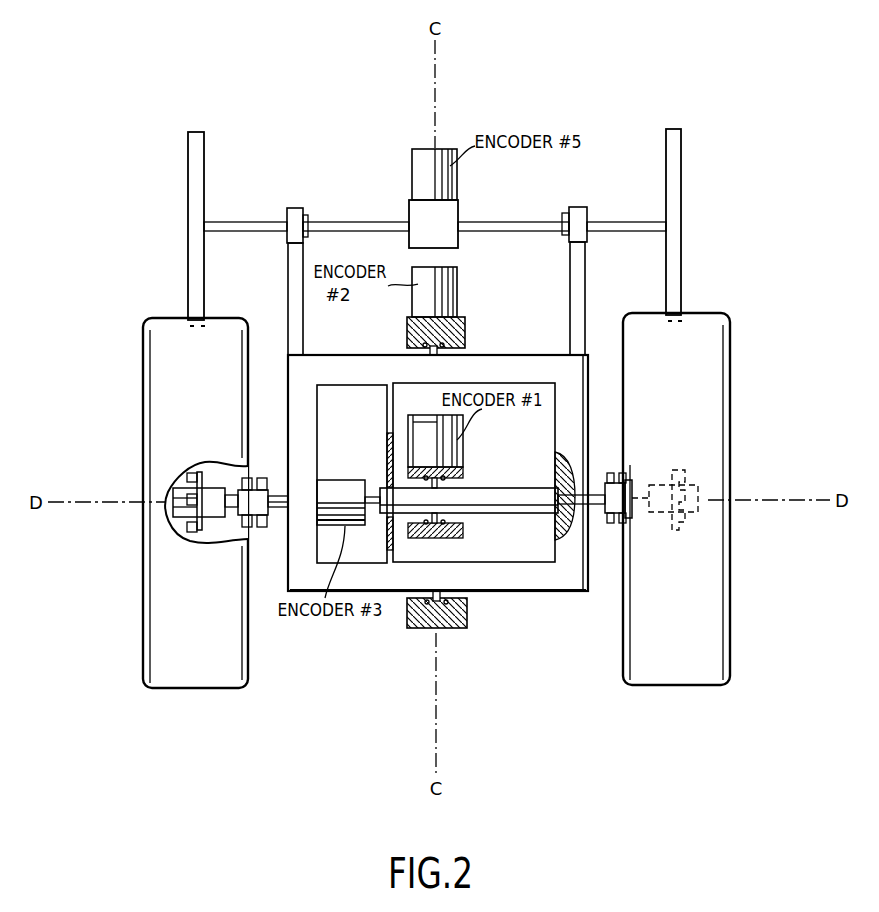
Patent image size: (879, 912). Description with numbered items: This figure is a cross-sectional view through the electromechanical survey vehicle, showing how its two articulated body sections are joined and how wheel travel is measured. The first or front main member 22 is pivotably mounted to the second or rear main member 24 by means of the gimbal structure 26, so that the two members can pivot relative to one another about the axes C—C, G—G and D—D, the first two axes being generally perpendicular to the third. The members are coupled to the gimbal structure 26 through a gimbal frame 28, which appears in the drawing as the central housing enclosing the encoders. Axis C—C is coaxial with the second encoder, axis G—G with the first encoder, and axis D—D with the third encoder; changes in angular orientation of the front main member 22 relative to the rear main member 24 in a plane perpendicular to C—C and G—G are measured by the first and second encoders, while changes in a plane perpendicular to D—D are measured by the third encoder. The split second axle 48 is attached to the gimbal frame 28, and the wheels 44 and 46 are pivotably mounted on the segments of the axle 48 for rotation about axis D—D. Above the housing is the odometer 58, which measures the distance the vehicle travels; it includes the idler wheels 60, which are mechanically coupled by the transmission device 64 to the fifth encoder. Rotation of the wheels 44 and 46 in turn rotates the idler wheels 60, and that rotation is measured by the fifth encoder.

The front main member 22 is at (466, 323).
The rear main member 24 is at (462, 475).
The gimbal structure 26 is at (548, 592).
The gimbal frame 28 is at (503, 584).
The wheel 44 is at (715, 466).
The wheel 46 is at (148, 449).
The split second axle 48 is at (230, 511).
The odometer 58 is at (685, 211).
The idler wheels 60 is at (204, 146).
The transmission device 64 is at (450, 212).